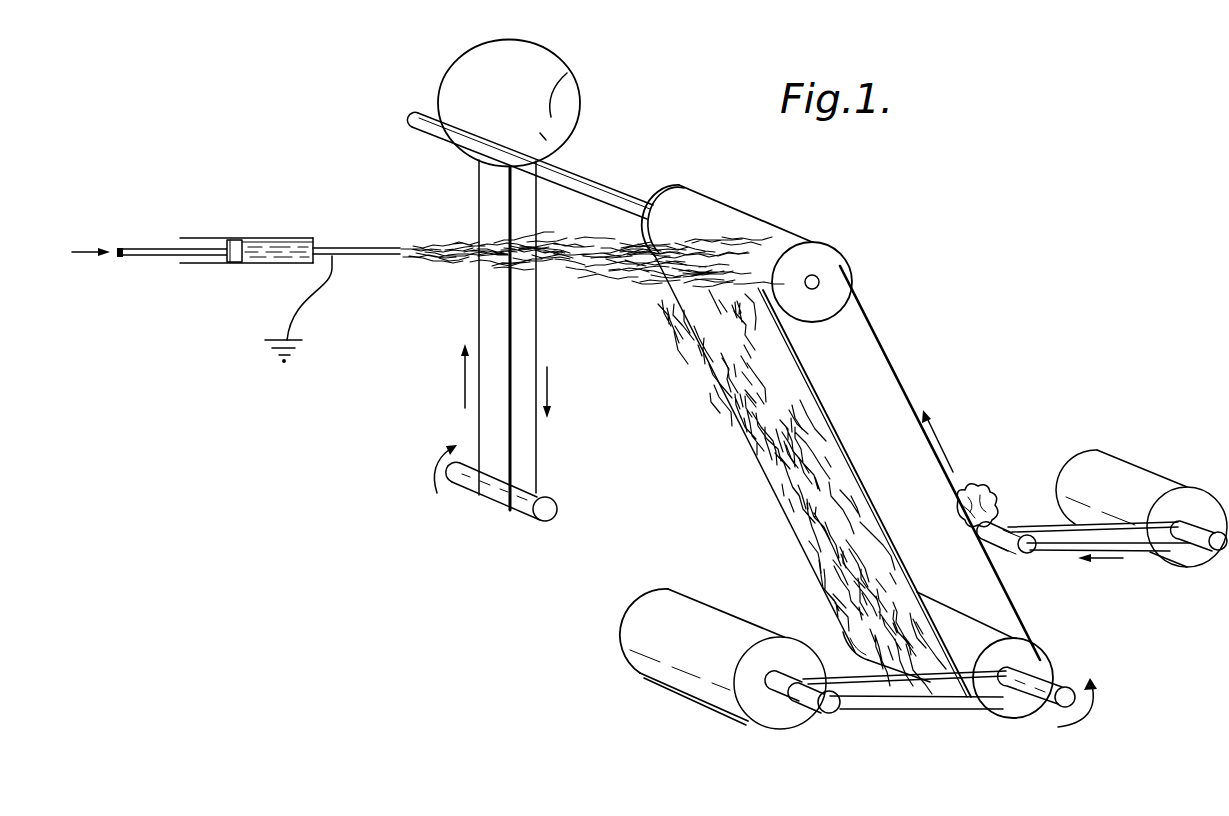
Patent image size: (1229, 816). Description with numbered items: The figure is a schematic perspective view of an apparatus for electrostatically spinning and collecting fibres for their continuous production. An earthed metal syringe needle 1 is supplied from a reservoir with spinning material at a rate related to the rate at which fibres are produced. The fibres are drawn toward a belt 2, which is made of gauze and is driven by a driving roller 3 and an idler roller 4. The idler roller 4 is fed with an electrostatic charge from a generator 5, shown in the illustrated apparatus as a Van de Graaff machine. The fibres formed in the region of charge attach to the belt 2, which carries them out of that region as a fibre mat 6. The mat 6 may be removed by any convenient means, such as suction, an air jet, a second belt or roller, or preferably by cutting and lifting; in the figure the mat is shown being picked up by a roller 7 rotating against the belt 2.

The earthed metal syringe needle 1 is at (372, 254).
The belt 2 is at (897, 377).
The driving roller 3 is at (1033, 658).
The idler roller 4 is at (837, 273).
The generator 5 is at (560, 105).
The fibre mat 6 is at (755, 448).
The roller 7 is at (1027, 553).